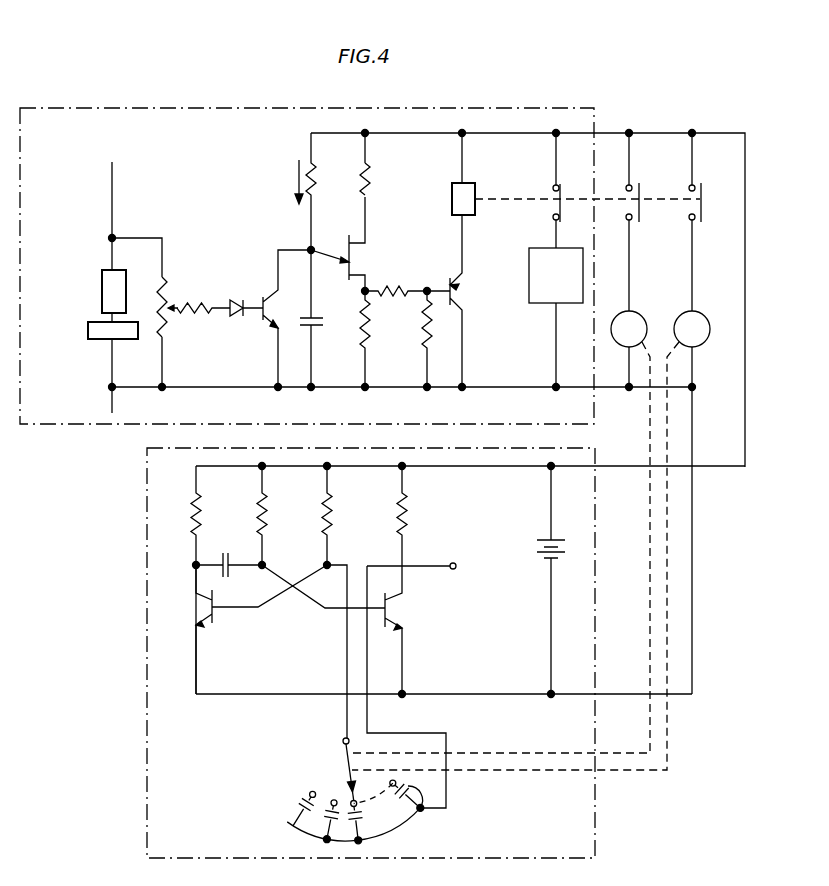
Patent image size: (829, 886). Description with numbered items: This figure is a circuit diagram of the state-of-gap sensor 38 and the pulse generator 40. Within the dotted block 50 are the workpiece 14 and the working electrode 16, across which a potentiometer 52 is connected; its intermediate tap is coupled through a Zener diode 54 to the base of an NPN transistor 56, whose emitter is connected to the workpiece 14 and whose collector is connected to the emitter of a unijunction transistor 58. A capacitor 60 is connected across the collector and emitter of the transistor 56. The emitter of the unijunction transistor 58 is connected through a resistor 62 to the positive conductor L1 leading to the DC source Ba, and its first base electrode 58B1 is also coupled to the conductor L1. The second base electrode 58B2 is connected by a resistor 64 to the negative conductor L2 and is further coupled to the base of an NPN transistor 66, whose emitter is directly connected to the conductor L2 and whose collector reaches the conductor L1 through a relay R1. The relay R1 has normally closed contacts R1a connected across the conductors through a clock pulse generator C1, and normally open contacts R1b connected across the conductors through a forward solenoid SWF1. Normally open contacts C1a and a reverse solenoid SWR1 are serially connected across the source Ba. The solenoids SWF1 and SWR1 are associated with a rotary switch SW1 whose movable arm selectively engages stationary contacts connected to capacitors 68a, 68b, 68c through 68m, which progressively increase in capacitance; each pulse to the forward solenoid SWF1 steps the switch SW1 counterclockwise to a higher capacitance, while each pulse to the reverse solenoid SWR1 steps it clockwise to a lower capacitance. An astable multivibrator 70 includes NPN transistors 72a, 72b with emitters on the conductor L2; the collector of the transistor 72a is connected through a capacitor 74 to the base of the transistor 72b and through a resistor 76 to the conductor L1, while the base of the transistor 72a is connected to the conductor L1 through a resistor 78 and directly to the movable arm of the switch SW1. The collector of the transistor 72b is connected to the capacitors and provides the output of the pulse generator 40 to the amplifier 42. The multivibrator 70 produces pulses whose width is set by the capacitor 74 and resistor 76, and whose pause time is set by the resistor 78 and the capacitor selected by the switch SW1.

The dotted block 50 is at (218, 108).
The pulse generator 40 is at (596, 779).
The state sensor 38 is at (652, 118).
The working electrode 16 is at (104, 272).
The workpiece 14 is at (86, 350).
The potentiometer 52 is at (168, 322).
The Zener diode 54 is at (236, 304).
The NPN type transistor 56 is at (263, 322).
The unijunction transistor 58 is at (347, 258).
The first base electrode 58B1 is at (362, 246).
The second base electrode 58B2 is at (362, 272).
The capacitor 60 is at (320, 326).
The resistor 62 is at (318, 180).
The resistor 64 is at (372, 330).
The NPN type transistor 66 is at (456, 288).
The relay R1 is at (496, 174).
The normally closed contacts R1a is at (553, 190).
The normally open contacts R1b is at (641, 196).
The clock pulse generator C1 is at (546, 304).
The normally open contacts C1a is at (703, 196).
The forward solenoid SWF1 is at (646, 304).
The reverse solenoid SWR1 is at (708, 304).
The positive conductor L1 is at (510, 133).
The negative conductor L2 is at (495, 388).
The astable multivibrator 70 is at (288, 668).
The NPN type transistor 72a is at (210, 608).
The NPN type transistor 72b is at (396, 608).
The capacitor 74 is at (230, 553).
The resistor 76 is at (270, 512).
The resistor 78 is at (334, 512).
The DC source Ba is at (548, 538).
The amplifier 42 is at (466, 566).
The rotary switch SW1 is at (364, 703).
The capacitor 68a is at (302, 798).
The capacitor 68b is at (310, 826).
The capacitor 68c is at (346, 796).
The capacitor 68m is at (418, 814).